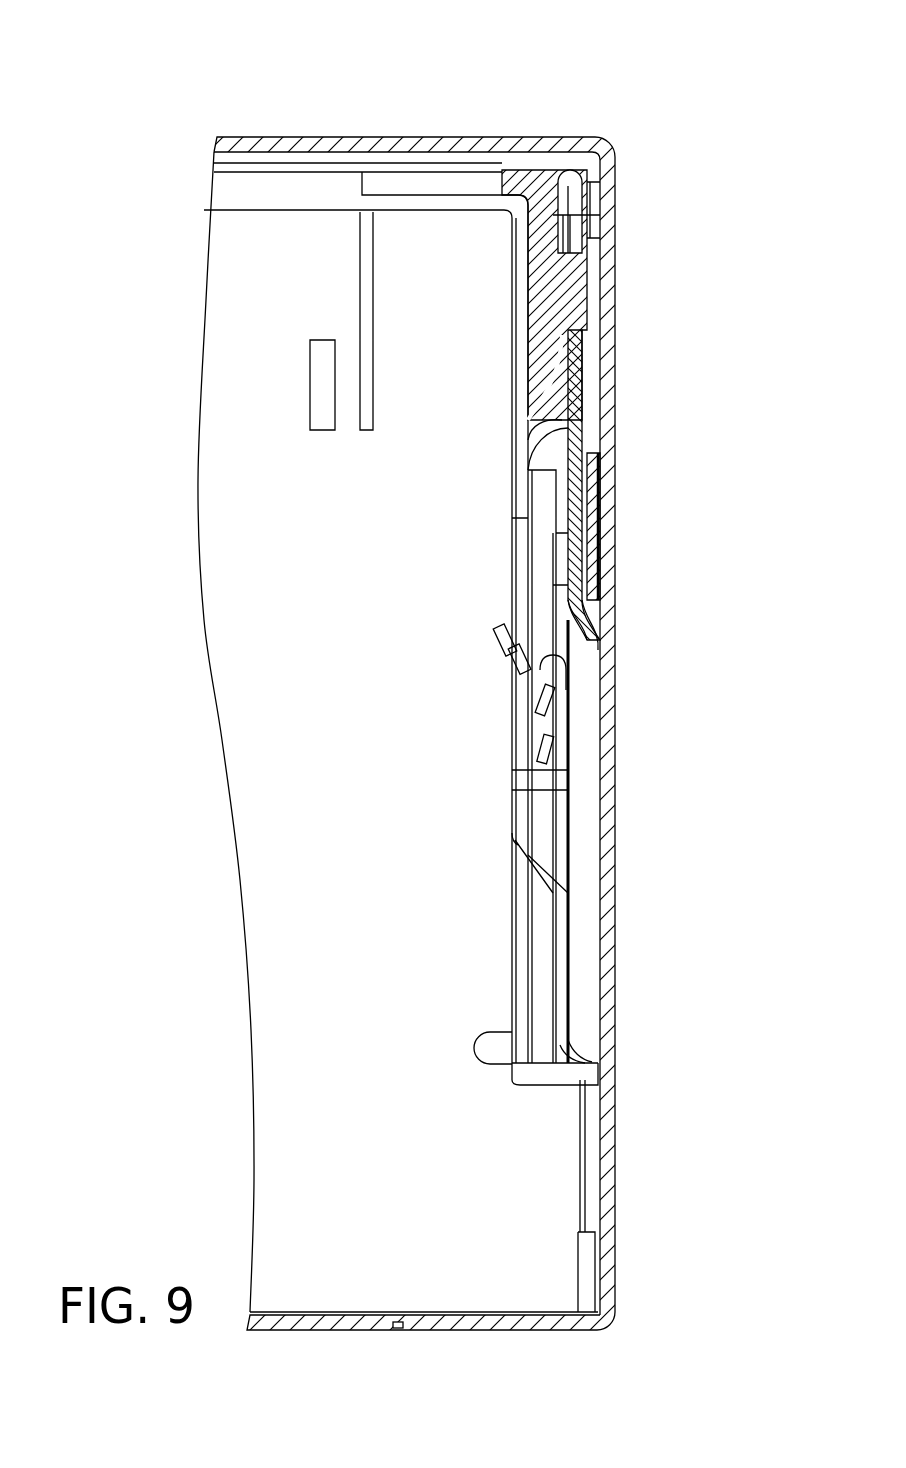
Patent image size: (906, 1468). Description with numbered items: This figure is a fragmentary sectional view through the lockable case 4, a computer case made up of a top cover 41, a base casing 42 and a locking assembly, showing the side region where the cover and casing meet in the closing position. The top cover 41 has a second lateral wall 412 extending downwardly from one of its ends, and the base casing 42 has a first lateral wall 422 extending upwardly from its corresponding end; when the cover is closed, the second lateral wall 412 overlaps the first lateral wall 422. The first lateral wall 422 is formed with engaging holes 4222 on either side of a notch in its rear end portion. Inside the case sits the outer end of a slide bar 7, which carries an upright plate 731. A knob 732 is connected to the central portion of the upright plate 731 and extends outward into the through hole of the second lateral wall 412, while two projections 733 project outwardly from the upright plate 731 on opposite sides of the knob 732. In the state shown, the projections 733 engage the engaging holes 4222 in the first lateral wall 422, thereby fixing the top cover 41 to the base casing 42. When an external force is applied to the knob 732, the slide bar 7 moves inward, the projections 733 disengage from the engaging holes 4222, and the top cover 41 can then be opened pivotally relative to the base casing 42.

The lockable case 4 is at (322, 137).
The top cover 41 is at (446, 137).
The second lateral wall 412 is at (608, 336).
The base casing 42 is at (548, 1331).
The first lateral wall 422 is at (606, 784).
The engaging hole 4222 is at (590, 312).
The slide bar 7 is at (447, 185).
The upright plate 731 is at (566, 214).
The knob 732 is at (592, 420).
The projection 733 is at (594, 245).